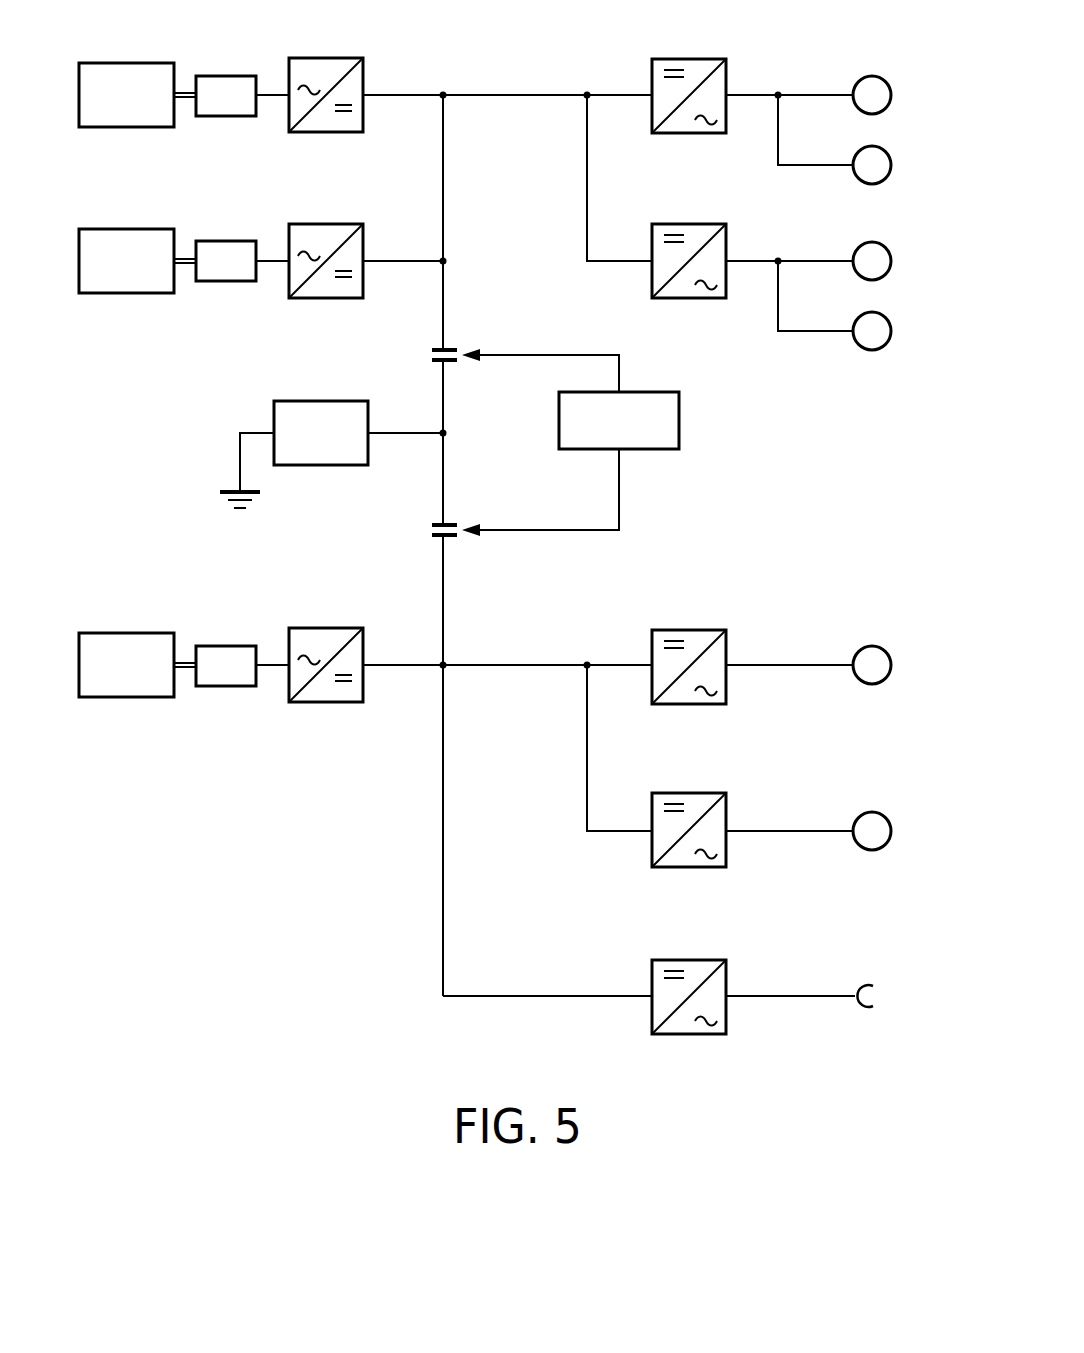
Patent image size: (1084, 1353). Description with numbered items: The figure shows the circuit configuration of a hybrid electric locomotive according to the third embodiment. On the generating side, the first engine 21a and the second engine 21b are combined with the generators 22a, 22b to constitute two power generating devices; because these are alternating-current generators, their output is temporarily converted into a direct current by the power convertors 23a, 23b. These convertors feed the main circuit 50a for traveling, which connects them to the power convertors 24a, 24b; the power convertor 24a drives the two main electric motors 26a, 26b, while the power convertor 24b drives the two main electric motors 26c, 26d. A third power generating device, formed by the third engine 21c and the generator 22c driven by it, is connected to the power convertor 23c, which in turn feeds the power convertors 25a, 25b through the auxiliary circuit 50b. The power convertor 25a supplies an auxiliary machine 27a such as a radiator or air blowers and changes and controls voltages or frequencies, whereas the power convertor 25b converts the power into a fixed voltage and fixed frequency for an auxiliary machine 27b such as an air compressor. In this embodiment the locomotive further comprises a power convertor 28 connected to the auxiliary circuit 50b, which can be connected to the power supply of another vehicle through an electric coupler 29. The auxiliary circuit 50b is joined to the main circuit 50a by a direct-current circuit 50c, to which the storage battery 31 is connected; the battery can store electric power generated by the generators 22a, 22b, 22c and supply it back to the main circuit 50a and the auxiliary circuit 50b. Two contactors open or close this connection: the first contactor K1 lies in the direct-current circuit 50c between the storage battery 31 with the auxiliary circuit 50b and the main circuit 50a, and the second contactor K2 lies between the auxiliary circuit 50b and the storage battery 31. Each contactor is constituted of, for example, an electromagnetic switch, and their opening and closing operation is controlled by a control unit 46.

The first engine 21a is at (129, 63).
The second engine 21b is at (129, 229).
The third engine 21c is at (129, 633).
The generator 22a is at (227, 76).
The generator 22b is at (227, 241).
The generator 22c is at (227, 646).
The power convertor 23a is at (330, 58).
The power convertor 23b is at (330, 224).
The power convertor 23c is at (330, 628).
The power convertor 24a is at (692, 59).
The power convertor 24b is at (692, 224).
The power convertor 25a is at (690, 630).
The power convertor 25b is at (690, 793).
The main electric motor 26a is at (885, 83).
The main electric motor 26b is at (885, 153).
The main electric motor 26c is at (885, 249).
The main electric motor 26d is at (885, 319).
The auxiliary machine 27a is at (885, 653).
The auxiliary machine 27b is at (885, 819).
The power convertor 28 is at (692, 960).
The electric coupler 29 is at (876, 984).
The storage battery 31 is at (320, 401).
The control unit 46 is at (680, 420).
The first contactor K1 is at (430, 356).
The second contactor K2 is at (430, 531).
The main circuit 50a is at (512, 85).
The auxiliary circuit 50b is at (512, 680).
The direct-current circuit 50c is at (444, 303).